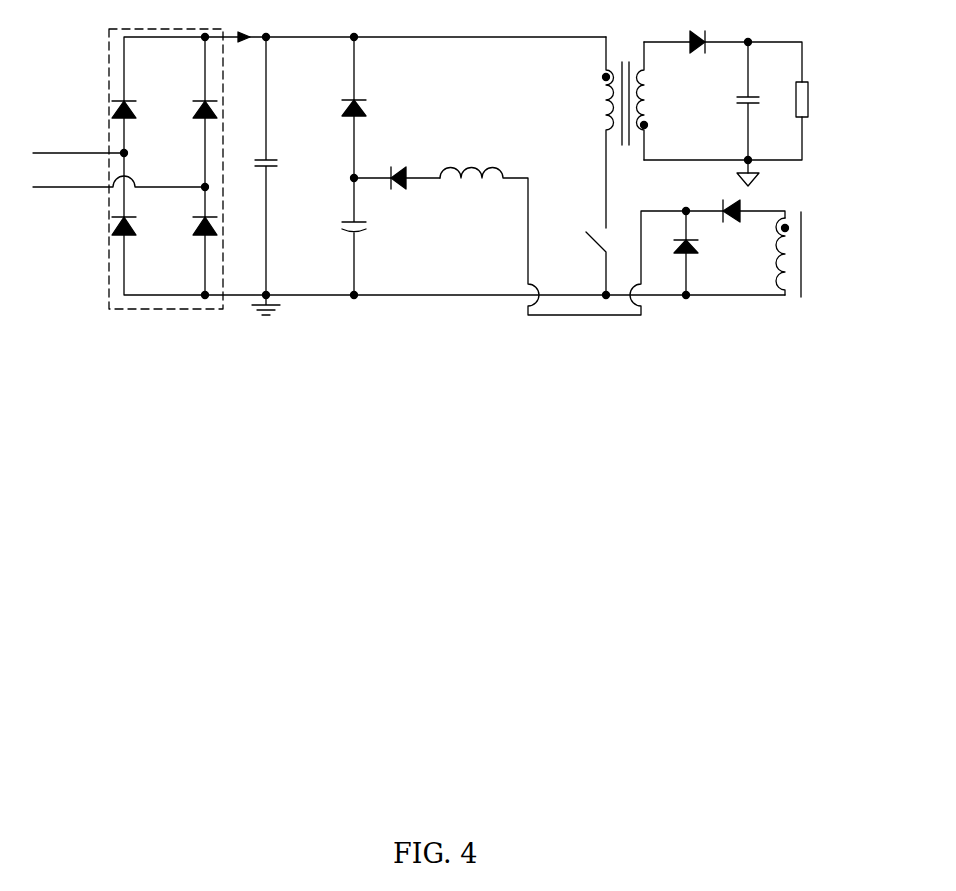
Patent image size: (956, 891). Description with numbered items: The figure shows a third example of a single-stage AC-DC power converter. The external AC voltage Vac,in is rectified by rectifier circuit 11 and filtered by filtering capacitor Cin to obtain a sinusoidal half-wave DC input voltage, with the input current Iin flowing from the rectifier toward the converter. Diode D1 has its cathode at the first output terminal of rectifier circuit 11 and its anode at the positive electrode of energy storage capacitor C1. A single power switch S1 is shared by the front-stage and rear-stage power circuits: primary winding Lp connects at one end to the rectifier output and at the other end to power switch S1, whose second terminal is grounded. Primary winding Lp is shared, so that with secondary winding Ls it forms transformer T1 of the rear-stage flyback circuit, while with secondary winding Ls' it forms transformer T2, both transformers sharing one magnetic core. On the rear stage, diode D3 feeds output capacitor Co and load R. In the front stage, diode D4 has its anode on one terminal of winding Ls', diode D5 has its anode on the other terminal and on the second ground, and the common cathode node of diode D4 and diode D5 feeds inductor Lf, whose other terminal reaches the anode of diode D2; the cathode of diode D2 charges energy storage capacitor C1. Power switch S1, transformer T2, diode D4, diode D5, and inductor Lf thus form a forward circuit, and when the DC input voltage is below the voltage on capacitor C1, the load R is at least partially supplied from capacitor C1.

The rectifier circuit 11 is at (223, 80).
The diode D1 is at (373, 106).
The diode D2 is at (397, 192).
The diode D3 is at (696, 57).
The diode D4 is at (734, 226).
The diode D5 is at (701, 255).
The energy storage capacitor C1 is at (338, 237).
The filtering capacitor Cin is at (285, 165).
The output capacitor Co is at (731, 100).
The load R is at (726, 101).
The inductor Lf is at (563, 229).
The primary winding Lp is at (594, 132).
The secondary winding Ls is at (656, 101).
The power switch S1 is at (612, 263).
The transformer T1 is at (625, 132).
The transformer T2 is at (806, 265).
The external AC voltage Vac is at (119, 170).
The input current Iin is at (405, 25).